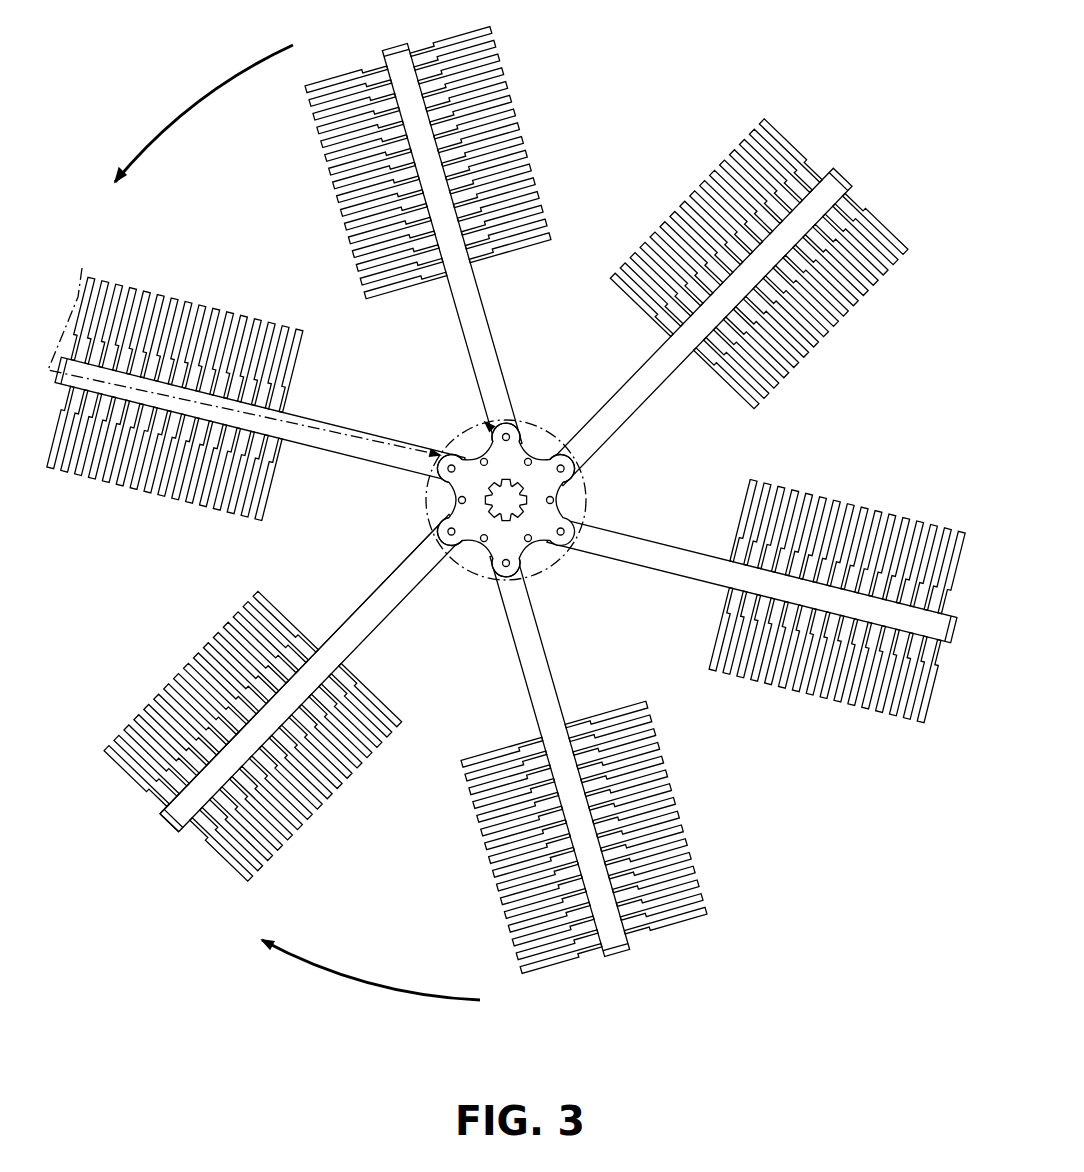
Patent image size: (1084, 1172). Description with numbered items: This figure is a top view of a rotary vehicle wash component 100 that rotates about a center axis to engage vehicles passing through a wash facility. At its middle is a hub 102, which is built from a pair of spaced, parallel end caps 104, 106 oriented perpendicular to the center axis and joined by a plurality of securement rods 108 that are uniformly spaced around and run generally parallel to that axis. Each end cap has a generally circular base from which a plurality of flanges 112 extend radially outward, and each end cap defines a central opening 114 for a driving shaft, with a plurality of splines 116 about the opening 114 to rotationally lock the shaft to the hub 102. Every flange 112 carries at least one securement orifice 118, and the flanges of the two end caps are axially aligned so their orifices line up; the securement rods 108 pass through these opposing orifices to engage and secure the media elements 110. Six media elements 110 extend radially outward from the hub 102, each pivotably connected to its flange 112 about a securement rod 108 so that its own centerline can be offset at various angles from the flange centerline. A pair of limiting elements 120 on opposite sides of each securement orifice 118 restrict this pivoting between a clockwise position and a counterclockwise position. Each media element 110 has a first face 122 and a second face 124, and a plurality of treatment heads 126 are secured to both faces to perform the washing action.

The rotary vehicle wash component 100 is at (506, 527).
The hub 102 is at (548, 512).
The end cap 104 is at (545, 557).
The end cap 106 is at (465, 447).
The securement rod 108 is at (455, 547).
The media element 110 is at (178, 830).
The flange 112 is at (495, 440).
The opening 114 is at (512, 516).
The spline 116 is at (458, 498).
The securement orifice 118 is at (566, 462).
The limiting element 120 is at (481, 548).
The first face 122 is at (372, 632).
The second face 124 is at (360, 605).
The treatment head 126 is at (112, 752).